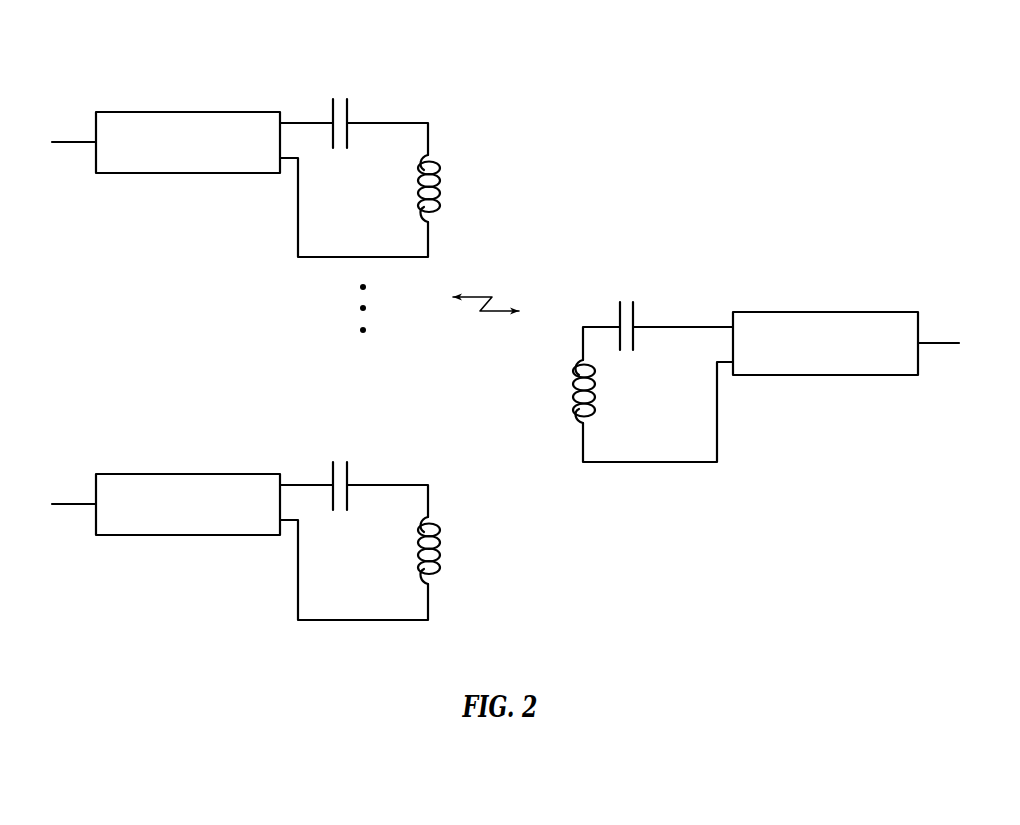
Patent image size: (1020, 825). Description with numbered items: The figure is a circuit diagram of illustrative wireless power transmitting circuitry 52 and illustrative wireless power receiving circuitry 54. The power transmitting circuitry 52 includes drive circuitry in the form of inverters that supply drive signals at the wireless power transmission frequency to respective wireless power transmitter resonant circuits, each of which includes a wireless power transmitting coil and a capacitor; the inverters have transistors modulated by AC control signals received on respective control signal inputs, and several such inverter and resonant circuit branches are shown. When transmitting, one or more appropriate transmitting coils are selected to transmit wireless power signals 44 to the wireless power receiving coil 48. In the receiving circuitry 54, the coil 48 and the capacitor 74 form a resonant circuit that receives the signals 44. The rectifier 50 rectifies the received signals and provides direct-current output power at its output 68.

The power transmitting circuitry 52 is at (43, 78).
The wireless power receiving circuitry 54 is at (573, 266).
The wireless power signals 44 is at (487, 313).
The capacitor 74 is at (652, 311).
The wireless power receiving coil 48 is at (557, 394).
The rectifier 50 is at (828, 376).
The output 68 is at (940, 344).